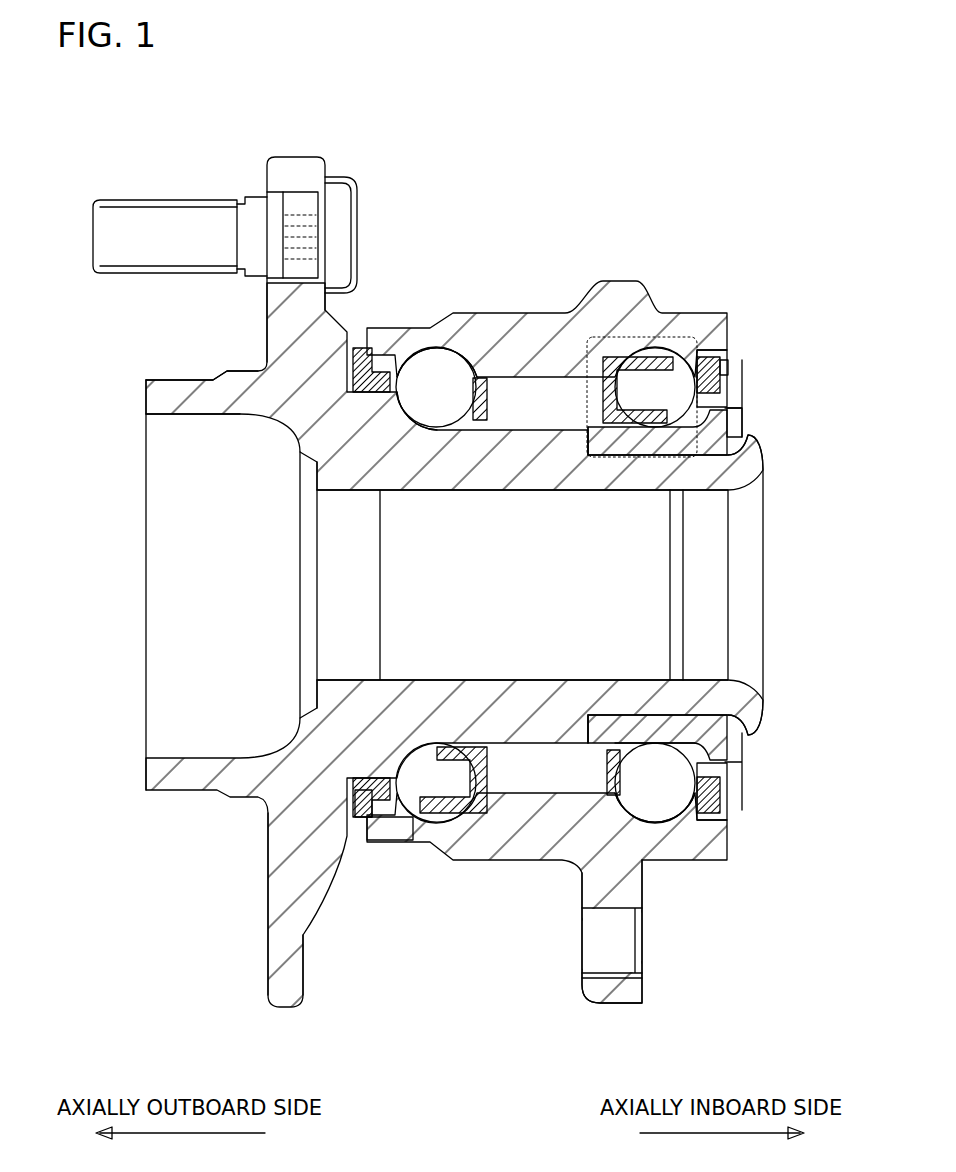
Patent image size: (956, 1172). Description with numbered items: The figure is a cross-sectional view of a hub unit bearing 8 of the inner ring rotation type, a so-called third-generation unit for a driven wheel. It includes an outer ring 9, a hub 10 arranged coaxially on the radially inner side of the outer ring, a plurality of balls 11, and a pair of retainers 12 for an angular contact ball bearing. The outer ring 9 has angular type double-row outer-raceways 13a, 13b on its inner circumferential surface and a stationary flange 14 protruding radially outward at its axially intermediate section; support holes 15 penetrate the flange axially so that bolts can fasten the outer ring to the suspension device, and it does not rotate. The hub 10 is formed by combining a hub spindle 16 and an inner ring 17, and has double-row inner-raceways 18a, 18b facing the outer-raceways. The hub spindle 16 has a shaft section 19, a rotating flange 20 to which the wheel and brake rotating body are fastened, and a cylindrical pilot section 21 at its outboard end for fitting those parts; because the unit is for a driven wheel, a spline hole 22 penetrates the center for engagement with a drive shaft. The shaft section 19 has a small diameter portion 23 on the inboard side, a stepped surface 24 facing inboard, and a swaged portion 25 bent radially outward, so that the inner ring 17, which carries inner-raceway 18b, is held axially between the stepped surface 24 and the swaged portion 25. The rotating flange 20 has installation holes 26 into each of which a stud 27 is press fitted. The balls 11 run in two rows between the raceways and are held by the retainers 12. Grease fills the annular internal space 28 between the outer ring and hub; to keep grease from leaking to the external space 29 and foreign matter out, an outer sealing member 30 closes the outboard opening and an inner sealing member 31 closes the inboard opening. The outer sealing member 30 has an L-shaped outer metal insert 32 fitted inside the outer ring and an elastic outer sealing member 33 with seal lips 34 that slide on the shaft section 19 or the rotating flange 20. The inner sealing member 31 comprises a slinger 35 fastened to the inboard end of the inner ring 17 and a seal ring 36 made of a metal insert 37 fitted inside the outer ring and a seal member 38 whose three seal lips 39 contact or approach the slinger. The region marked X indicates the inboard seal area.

The hub unit bearing 8 is at (135, 372).
The outer ring 9 is at (542, 316).
The hub 10 is at (160, 495).
The balls 11 is at (432, 350).
The retainers 12 is at (486, 355).
The outer-raceway 13a is at (452, 372).
The outer-raceway 13b is at (650, 822).
The stationary flange 14 is at (612, 1003).
The support holes 15 is at (582, 975).
The hub spindle 16 is at (160, 565).
The inner ring 17 is at (748, 427).
The inner-raceway 18a is at (398, 362).
The inner-raceway 18b is at (690, 845).
The shaft section 19 is at (513, 477).
The rotating flange 20 is at (296, 157).
The pilot section 21 is at (176, 380).
The spline hole 22 is at (640, 525).
The small diameter portion 23 is at (650, 690).
The stepped surface 24 is at (587, 712).
The swaged portion 25 is at (763, 715).
The installation holes 26 is at (346, 195).
The stud 27 is at (170, 213).
The internal space 28 is at (562, 418).
The external space 29 is at (748, 372).
The outer sealing member 30 is at (362, 340).
The inner sealing member 31 is at (728, 372).
The outer metal insert 32 is at (392, 838).
The outer sealing member 33 is at (376, 825).
The seal lip 34 is at (365, 825).
The slinger 35 is at (745, 368).
The seal ring 36 is at (715, 355).
The metal insert 37 is at (728, 840).
The seal member 38 is at (722, 818).
The seal lips 39 is at (722, 808).
The detail region X is at (695, 337).